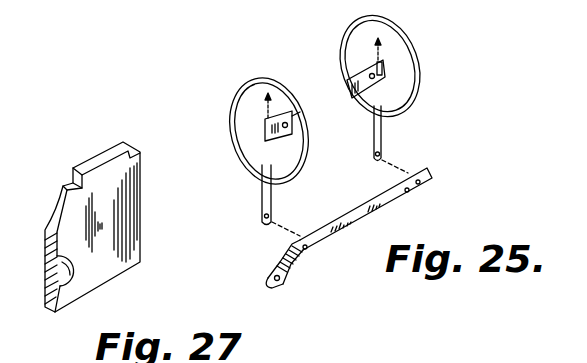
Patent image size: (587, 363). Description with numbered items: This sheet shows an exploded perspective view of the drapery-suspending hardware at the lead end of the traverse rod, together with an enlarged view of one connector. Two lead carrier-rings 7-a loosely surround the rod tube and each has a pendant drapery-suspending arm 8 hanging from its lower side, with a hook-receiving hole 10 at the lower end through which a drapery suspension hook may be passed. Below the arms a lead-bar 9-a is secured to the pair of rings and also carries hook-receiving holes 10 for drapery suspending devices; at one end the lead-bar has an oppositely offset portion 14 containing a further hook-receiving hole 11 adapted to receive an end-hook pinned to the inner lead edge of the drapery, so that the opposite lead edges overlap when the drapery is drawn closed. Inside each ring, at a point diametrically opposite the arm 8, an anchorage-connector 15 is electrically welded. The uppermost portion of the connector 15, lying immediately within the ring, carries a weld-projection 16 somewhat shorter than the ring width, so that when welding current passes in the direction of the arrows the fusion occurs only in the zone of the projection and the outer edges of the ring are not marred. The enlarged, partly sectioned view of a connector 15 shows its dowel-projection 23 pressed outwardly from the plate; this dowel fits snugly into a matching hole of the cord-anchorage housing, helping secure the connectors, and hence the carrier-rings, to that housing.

In FIG. 25, the lead carrier-ring 7-a is at (255, 80).
In FIG. 25, the drapery-suspending arm 8 is at (262, 193).
In FIG. 25, the lead-bar 9-a is at (358, 211).
In FIG. 25, the hook-receiving hole 10 is at (305, 252).
In FIG. 25, the hook-receiving hole 11 is at (278, 286).
In FIG. 25, the offset portion 14 is at (282, 267).
In FIG. 27, the anchorage-connector 15 is at (140, 248).
In FIG. 25, the anchorage-connector 15 is at (265, 137).
In FIG. 27, the weld-projection 16 is at (114, 148).
In FIG. 27, the dowel-projection 23 is at (70, 287).